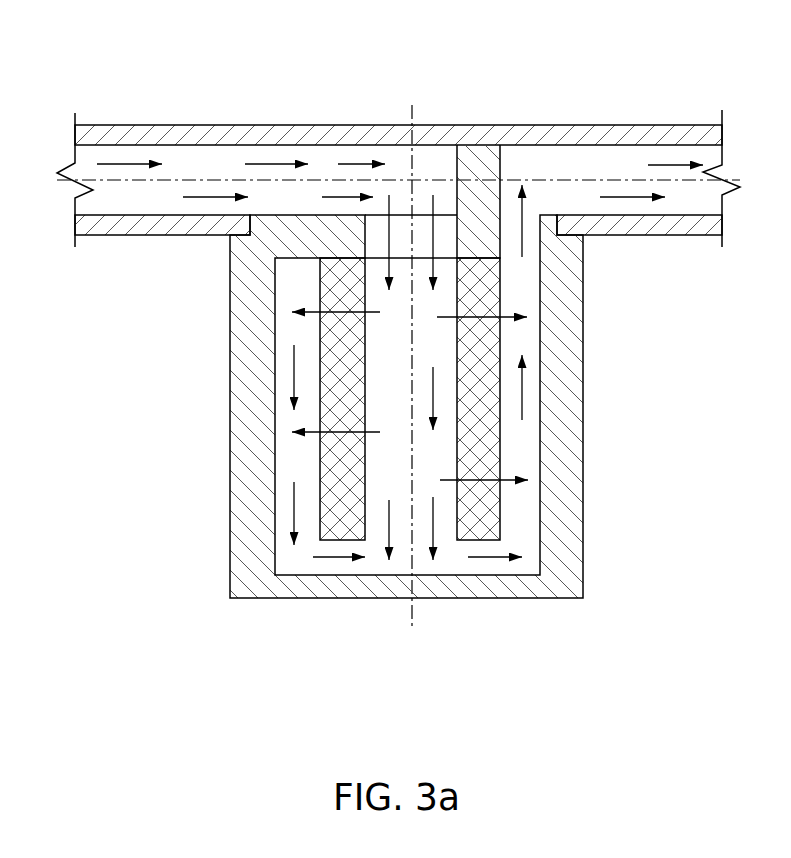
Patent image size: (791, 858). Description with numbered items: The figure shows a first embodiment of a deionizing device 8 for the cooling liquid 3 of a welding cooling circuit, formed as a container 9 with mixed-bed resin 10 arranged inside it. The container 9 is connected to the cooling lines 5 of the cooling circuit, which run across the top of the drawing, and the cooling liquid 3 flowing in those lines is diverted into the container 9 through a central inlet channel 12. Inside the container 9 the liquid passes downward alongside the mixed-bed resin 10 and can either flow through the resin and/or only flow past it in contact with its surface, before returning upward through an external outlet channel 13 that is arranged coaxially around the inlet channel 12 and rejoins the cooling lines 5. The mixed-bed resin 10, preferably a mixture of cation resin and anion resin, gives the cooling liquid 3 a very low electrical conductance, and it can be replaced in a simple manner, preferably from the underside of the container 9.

The cooling liquid 3 is at (209, 197).
The cooling lines 5 is at (198, 130).
The deionizing device 8 is at (107, 640).
The container 9 is at (348, 617).
The mixed-bed resin 10 is at (463, 540).
The central inlet channel 12 is at (423, 165).
The external outlet channel 13 is at (520, 440).